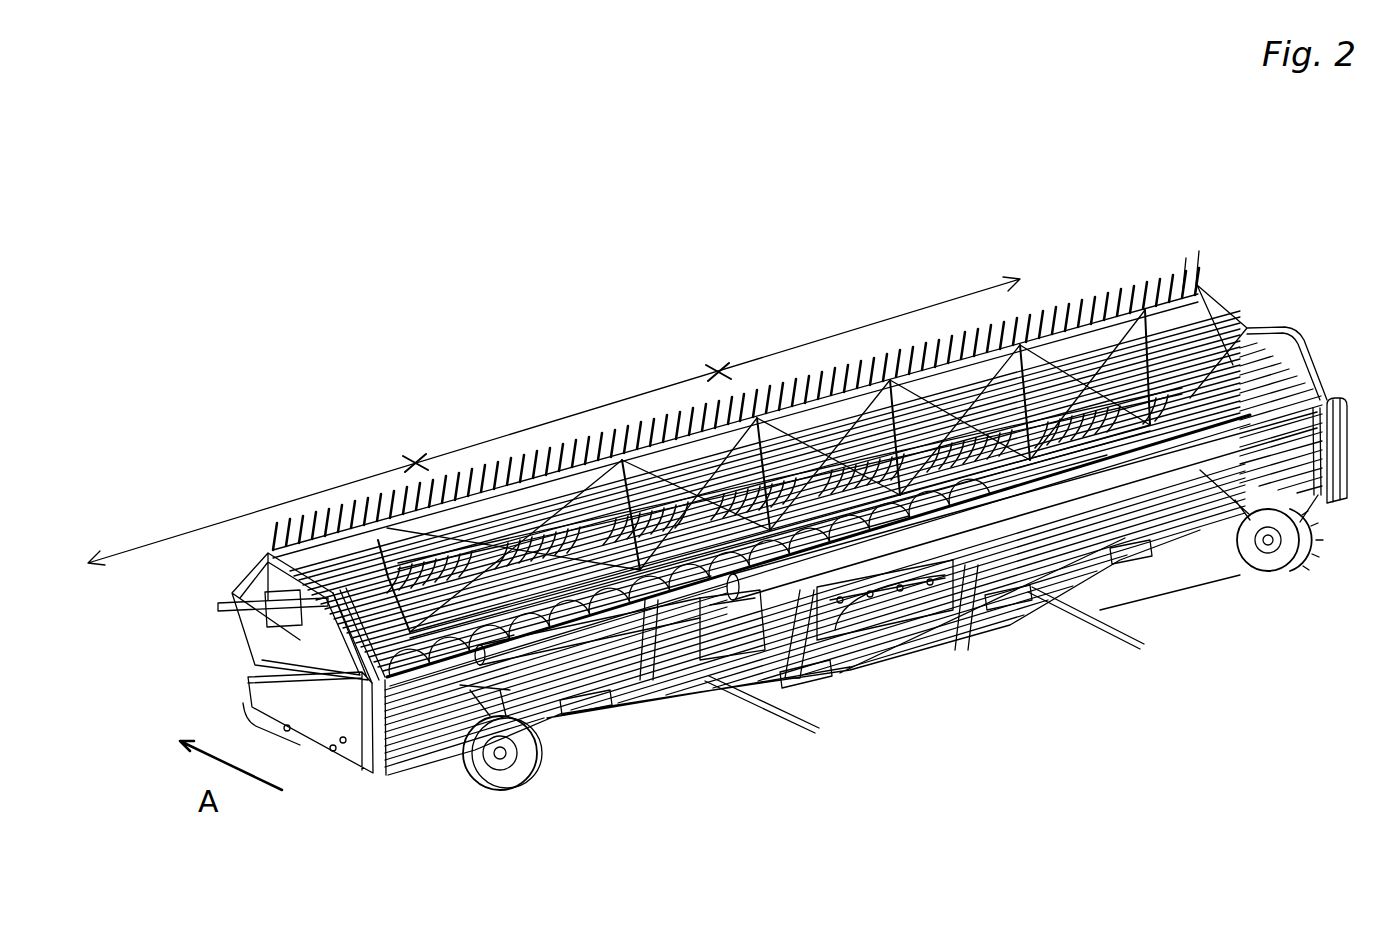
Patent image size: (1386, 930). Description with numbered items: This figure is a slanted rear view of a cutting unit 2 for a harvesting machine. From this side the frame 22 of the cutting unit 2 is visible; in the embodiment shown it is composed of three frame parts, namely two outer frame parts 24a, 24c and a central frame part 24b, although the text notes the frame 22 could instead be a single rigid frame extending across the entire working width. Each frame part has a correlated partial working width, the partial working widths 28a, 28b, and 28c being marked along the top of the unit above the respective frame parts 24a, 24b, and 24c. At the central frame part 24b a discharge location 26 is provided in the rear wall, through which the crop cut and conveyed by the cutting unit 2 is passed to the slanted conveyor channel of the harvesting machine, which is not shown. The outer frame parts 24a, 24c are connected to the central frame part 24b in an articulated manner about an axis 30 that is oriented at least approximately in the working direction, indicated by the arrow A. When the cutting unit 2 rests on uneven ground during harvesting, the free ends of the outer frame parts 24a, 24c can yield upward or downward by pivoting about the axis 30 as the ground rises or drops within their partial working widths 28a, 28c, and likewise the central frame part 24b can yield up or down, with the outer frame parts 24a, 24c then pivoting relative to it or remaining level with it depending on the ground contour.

The cutting unit 2 is at (497, 218).
The frame 22 is at (582, 697).
The outer frame part 24a is at (790, 733).
The central frame part 24b is at (1076, 645).
The outer frame part 24c is at (1346, 540).
The discharge location 26 is at (881, 630).
The partial working width 28a is at (392, 445).
The partial working width 28b is at (697, 347).
The partial working width 28c is at (1010, 257).
The axis 30 is at (817, 737).